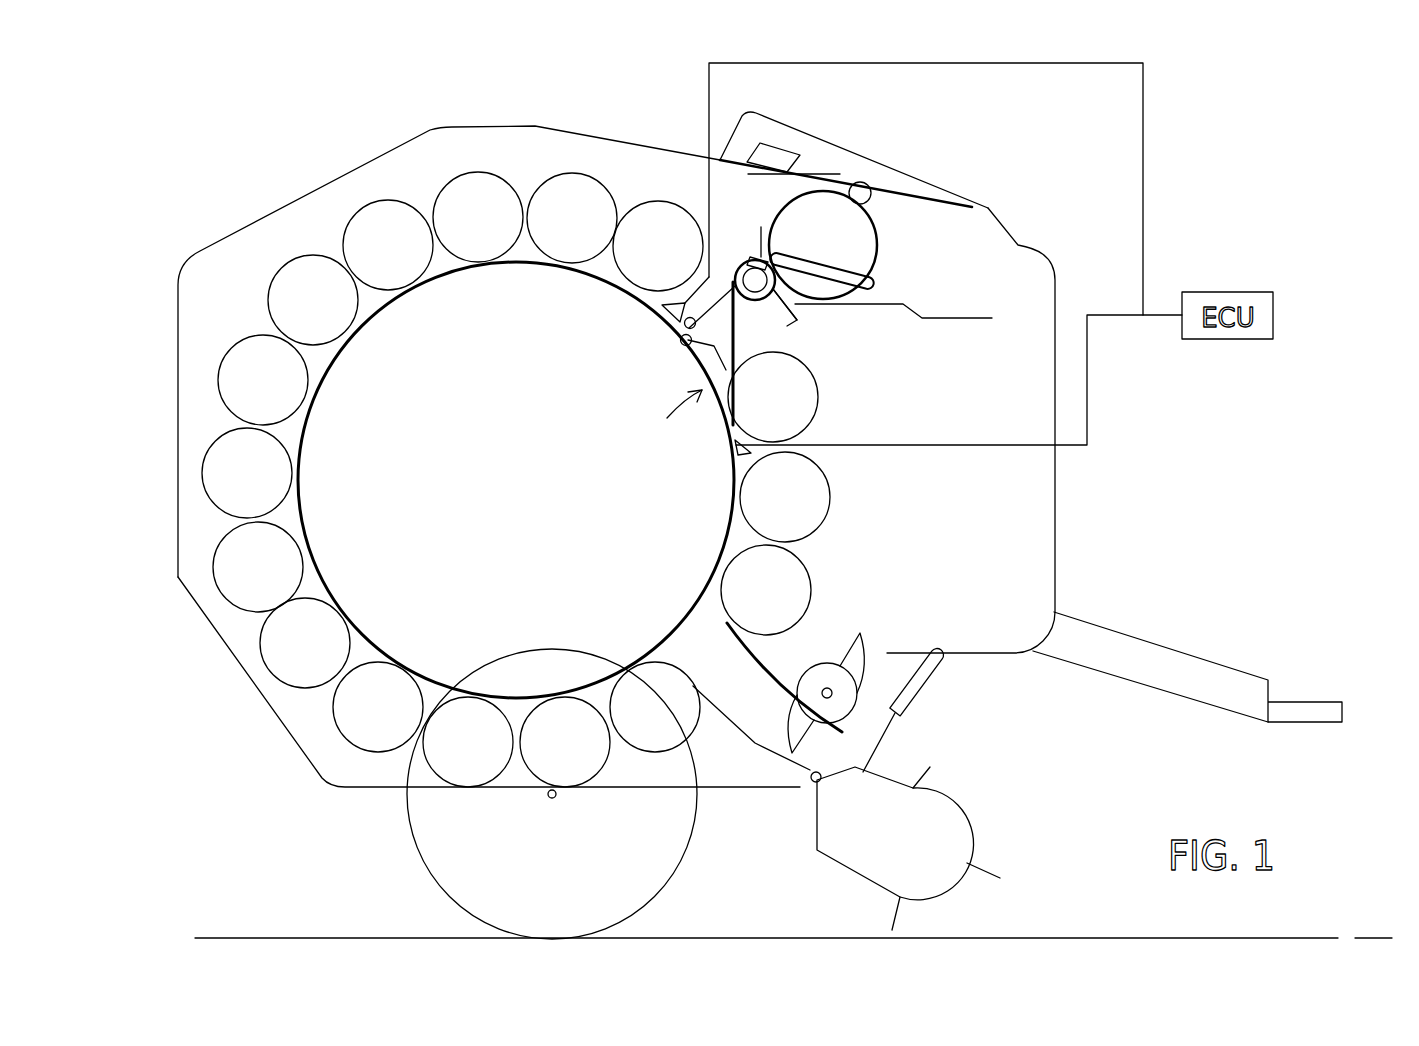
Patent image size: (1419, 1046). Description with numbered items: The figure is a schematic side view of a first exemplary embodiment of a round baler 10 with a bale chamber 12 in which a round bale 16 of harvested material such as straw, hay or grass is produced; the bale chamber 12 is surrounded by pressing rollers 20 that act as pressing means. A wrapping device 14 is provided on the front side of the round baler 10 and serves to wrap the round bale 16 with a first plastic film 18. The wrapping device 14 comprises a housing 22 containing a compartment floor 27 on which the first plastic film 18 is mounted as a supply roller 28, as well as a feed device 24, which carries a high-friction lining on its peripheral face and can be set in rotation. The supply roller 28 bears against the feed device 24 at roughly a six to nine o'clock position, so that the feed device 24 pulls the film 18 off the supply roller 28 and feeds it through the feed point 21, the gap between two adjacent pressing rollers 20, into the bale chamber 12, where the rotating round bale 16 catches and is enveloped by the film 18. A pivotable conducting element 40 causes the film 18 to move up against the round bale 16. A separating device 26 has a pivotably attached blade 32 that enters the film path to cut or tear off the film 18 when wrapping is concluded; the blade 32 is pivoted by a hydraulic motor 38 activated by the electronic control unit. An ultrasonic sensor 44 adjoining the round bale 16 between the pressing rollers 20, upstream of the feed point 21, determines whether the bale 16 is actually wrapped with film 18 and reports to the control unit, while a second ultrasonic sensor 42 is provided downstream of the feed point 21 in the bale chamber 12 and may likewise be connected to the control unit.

The round baler 10 is at (1080, 478).
The bale chamber 12 is at (215, 293).
The wrapping device 14 is at (967, 229).
The round bale 16 is at (536, 521).
The first plastic film 18 is at (757, 355).
The pressing rollers 20 is at (455, 173).
The feed point 21 is at (668, 421).
The housing 22 is at (823, 142).
The feed device 24 is at (746, 263).
The separating device 26 is at (795, 338).
The compartment floor 27 is at (958, 321).
The supply roller 28 is at (808, 247).
The blade 32 is at (788, 327).
The hydraulic motor 38 is at (873, 281).
The conducting element 40 is at (684, 346).
The second ultrasonic sensor 42 is at (733, 455).
The ultrasonic sensor 44 is at (670, 322).